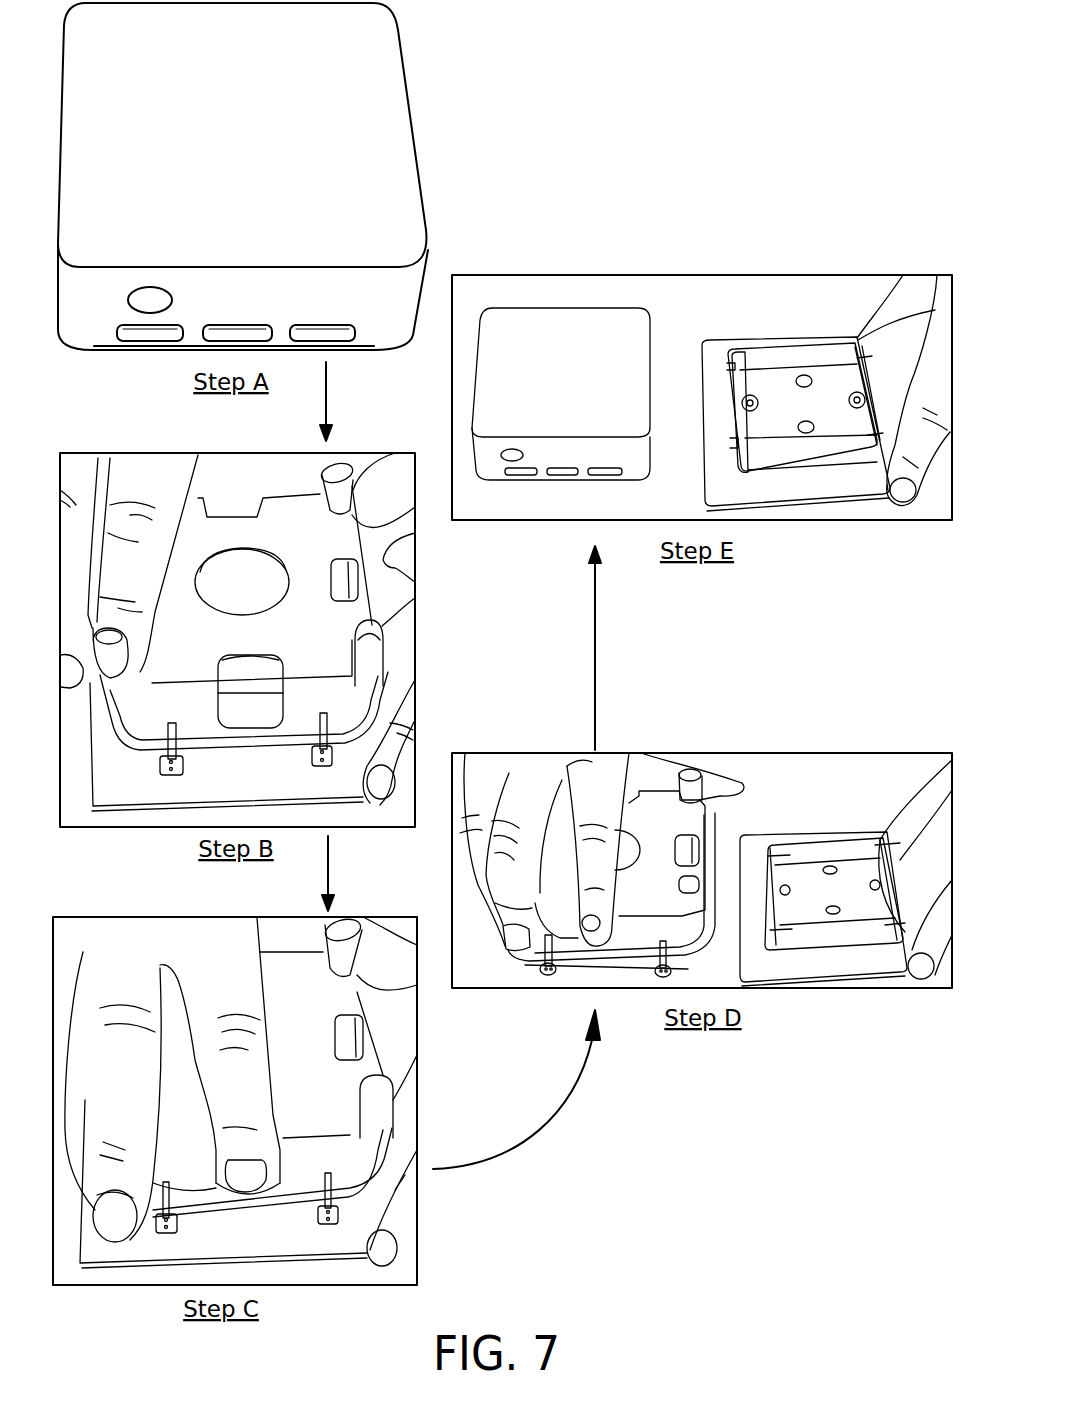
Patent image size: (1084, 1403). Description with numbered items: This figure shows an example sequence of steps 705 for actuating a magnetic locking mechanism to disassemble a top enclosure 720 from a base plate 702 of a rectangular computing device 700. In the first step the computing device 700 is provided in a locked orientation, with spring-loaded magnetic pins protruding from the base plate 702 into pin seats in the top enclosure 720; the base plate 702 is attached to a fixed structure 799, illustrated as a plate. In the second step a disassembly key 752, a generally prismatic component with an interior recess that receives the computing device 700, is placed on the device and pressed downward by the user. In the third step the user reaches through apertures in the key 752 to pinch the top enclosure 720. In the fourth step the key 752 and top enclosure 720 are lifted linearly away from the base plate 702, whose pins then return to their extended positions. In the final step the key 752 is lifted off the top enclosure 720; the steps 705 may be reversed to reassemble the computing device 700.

The computing device 700 is at (430, 136).
The sequence of steps 705 is at (770, 109).
The top enclosure 720 is at (354, 309).
The disassembly key 752 is at (422, 796).
The fixed structure 799 is at (493, 802).
The base plate 702 is at (816, 646).